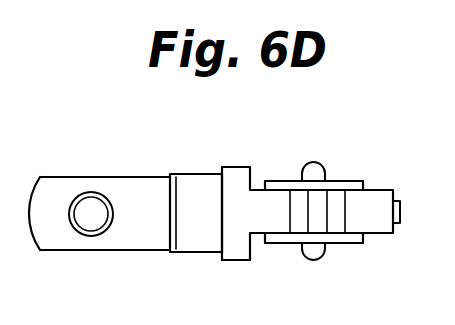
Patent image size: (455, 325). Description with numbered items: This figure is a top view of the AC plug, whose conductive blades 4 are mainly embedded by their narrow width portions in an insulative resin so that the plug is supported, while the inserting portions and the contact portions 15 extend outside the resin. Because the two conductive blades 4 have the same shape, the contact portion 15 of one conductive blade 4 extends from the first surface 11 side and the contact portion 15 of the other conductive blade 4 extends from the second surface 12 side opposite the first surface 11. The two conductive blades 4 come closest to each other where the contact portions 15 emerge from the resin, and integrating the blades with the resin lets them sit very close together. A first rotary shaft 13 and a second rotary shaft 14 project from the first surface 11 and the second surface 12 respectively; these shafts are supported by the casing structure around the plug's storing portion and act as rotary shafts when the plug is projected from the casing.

The conductive blade 4 is at (136, 197).
The first surface 11 is at (382, 189).
The second surface 12 is at (378, 235).
The first rotary shaft 13 is at (352, 181).
The second rotary shaft 14 is at (347, 245).
The contact portion 15 is at (313, 172).